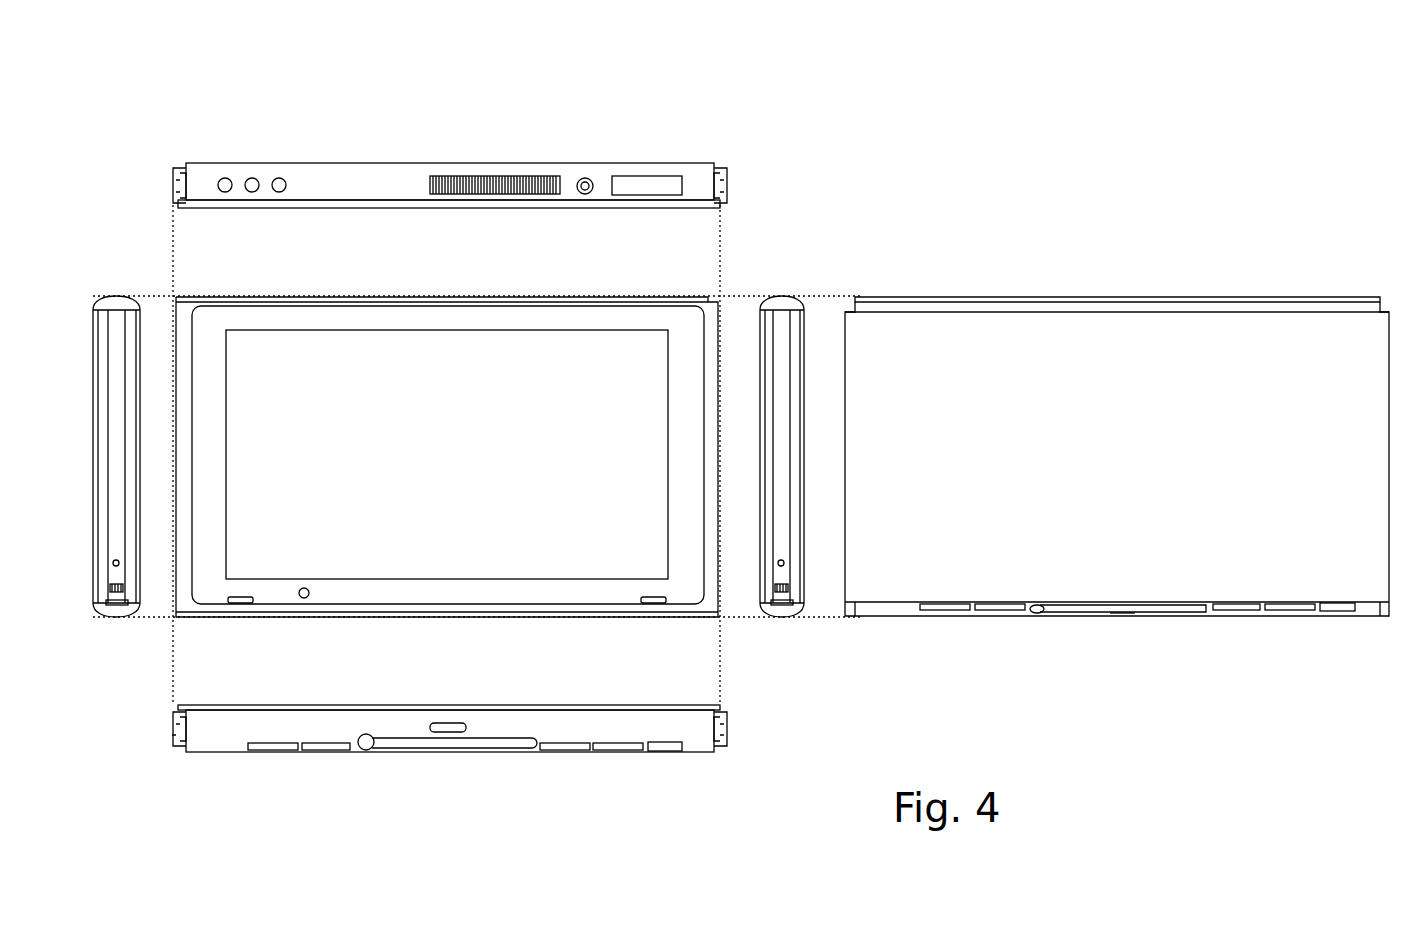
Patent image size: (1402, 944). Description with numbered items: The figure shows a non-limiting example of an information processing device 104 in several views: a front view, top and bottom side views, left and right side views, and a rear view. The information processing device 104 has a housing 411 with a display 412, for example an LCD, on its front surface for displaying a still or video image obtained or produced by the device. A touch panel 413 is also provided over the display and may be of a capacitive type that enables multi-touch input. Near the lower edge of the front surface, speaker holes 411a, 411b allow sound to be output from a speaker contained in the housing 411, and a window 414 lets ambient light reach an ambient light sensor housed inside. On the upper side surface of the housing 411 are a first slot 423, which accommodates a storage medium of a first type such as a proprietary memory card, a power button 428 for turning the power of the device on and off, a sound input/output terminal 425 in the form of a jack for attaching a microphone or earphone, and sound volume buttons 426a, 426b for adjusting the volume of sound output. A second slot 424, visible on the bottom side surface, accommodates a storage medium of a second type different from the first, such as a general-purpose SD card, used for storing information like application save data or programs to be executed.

The information processing device 104 is at (1232, 150).
The housing 411 is at (680, 317).
The speaker hole 411a is at (240, 604).
The speaker hole 411b is at (654, 604).
The display 412 is at (473, 333).
The touch panel 413 is at (529, 333).
The window 414 is at (305, 599).
The first slot 423 is at (650, 188).
The second slot 424 is at (668, 752).
The sound input/output terminal 425 is at (580, 179).
The sound volume button 426a is at (252, 177).
The sound volume button 426b is at (279, 177).
The power button 428 is at (225, 177).